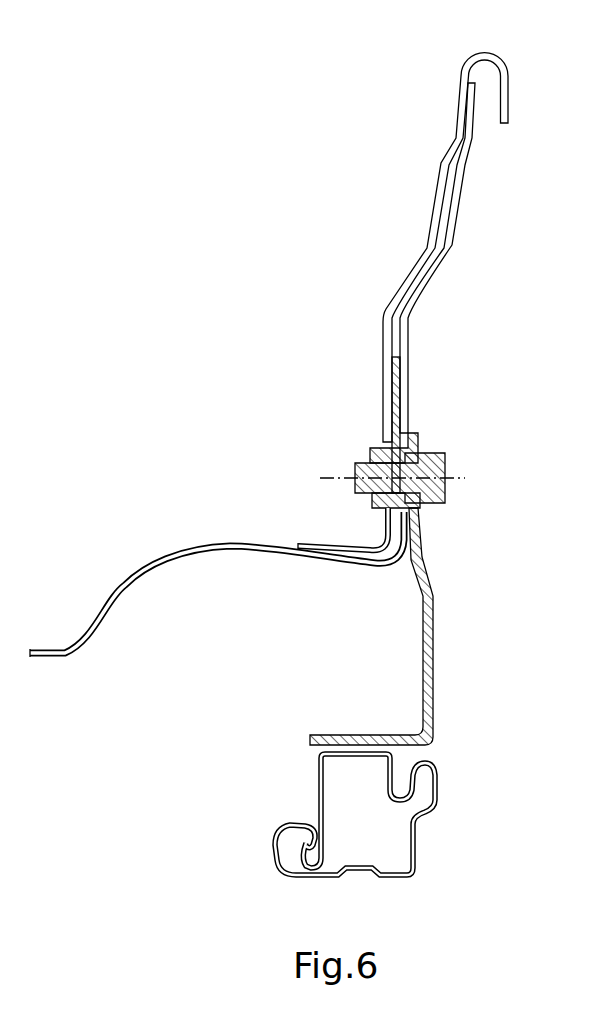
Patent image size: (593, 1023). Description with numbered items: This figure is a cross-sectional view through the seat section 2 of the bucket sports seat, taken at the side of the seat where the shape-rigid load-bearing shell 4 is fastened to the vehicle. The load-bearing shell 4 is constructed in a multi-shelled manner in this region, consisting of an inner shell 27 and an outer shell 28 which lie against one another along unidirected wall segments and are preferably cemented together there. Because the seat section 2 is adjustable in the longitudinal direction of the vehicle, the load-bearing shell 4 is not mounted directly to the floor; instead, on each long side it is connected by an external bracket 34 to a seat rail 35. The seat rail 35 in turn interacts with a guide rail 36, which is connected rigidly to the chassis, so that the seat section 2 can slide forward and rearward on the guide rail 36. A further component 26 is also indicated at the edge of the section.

The seat section 2 is at (488, 239).
The load-bearing shell 4 is at (463, 191).
The adjacent component 26 is at (592, 821).
The inner shell 27 is at (387, 352).
The outer shell 28 is at (460, 233).
The external bracket 34 is at (433, 620).
The seat rail 35 is at (359, 835).
The guide rail 36 is at (412, 875).